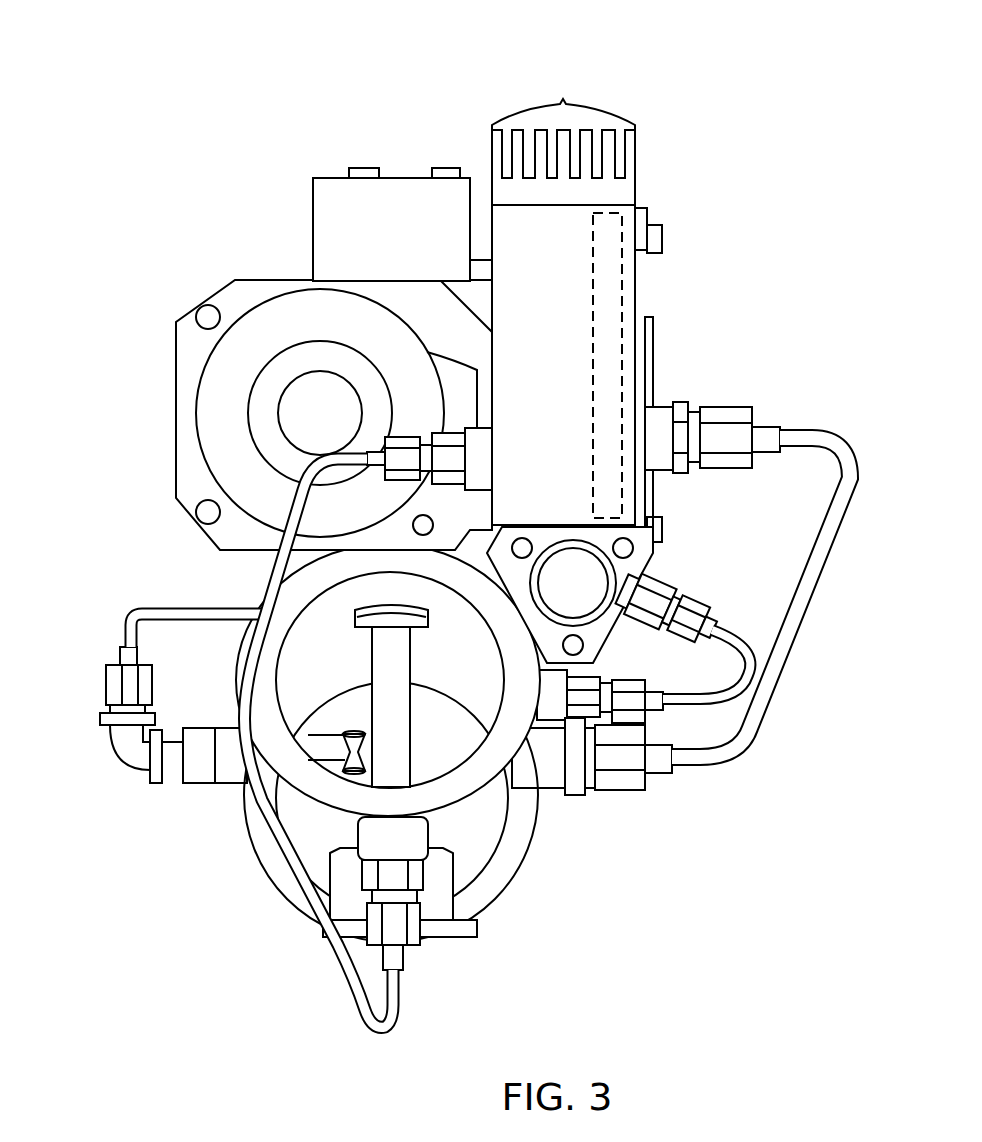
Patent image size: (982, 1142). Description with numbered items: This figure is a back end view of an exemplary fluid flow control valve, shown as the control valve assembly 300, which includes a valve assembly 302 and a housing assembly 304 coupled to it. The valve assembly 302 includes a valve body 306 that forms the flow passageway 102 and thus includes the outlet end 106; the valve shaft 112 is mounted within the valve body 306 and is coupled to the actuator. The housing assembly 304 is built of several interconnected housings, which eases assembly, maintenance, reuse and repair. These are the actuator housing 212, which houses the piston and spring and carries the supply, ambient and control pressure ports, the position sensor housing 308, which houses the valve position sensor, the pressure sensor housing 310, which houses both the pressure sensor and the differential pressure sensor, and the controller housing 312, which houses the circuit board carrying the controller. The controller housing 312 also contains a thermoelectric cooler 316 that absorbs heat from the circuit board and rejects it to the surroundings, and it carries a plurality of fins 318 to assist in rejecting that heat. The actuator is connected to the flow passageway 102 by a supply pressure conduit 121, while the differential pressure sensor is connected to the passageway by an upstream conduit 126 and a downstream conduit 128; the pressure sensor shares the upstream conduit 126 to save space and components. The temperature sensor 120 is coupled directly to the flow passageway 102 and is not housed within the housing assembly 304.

The control valve assembly 300 is at (450, 518).
The valve assembly 302 is at (450, 732).
The housing assembly 304 is at (436, 368).
The valve body 306 is at (357, 757).
The position sensor housing 308 is at (418, 246).
The pressure sensor housing 310 is at (554, 599).
The controller housing 312 is at (607, 312).
The thermoelectric (Peltier) cooler 316 is at (603, 293).
The fins 318 is at (563, 104).
The actuator housing 212 is at (186, 416).
The outlet end 106 is at (308, 670).
The shaft 112 is at (400, 705).
The upstream conduit 126 is at (158, 610).
The downstream conduit 128 is at (727, 633).
The supply pressure conduit 121 is at (803, 597).
The flow passageway 102 is at (453, 834).
The temperature sensor 120 is at (420, 843).